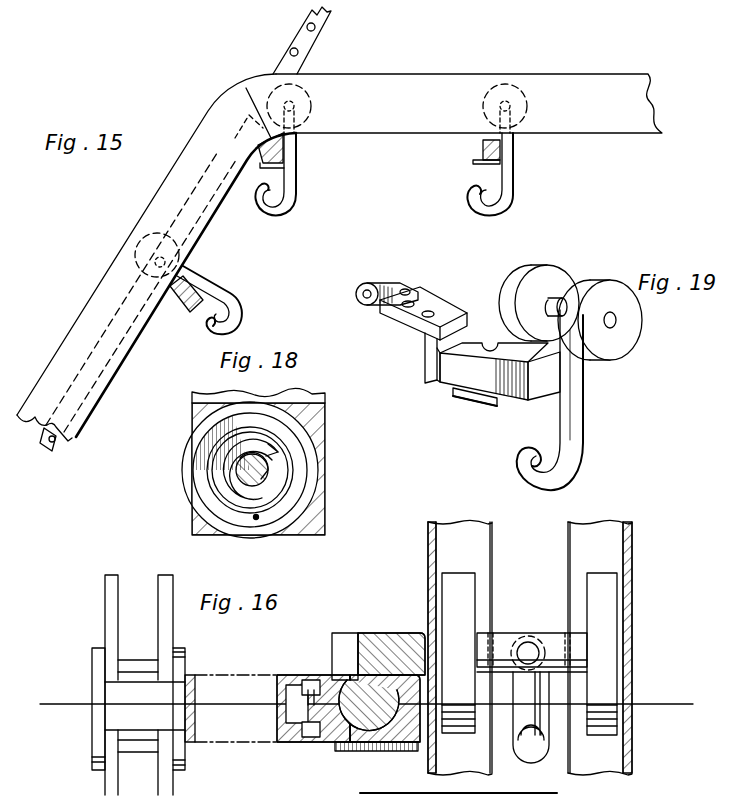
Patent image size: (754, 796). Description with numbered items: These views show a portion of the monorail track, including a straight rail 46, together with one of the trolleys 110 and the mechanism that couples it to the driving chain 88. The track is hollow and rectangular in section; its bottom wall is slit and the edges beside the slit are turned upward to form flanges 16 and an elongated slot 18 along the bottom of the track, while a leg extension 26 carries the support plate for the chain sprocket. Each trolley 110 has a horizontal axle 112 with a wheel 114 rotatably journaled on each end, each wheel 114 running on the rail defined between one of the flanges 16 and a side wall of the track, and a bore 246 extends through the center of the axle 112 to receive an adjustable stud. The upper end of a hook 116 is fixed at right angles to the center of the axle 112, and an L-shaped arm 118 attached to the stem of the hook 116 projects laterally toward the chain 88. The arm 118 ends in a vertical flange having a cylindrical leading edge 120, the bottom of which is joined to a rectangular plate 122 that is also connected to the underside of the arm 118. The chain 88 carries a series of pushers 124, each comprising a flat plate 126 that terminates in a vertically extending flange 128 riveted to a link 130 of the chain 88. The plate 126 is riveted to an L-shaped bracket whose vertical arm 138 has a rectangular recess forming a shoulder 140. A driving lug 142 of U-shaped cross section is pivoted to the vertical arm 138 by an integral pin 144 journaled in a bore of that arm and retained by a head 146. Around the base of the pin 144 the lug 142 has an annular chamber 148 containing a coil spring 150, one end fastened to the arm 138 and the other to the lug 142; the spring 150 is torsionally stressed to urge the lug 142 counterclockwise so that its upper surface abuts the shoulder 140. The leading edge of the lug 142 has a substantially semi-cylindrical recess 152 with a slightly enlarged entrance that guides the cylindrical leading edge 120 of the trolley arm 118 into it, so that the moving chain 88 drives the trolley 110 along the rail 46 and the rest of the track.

In FIG. 16, the flanges 16 is at (568, 572).
In FIG. 16, the elongated slot 18 is at (532, 543).
In FIG. 15, the leg extension 26 is at (62, 337).
In FIG. 15, the straight rail 46 is at (590, 74).
In FIG. 15, the link-type chain 88 is at (286, 26).
In FIG. 16, the link-type chain 88 is at (97, 626).
In FIG. 19, the trolley 110 is at (536, 250).
In FIG. 19, the horizontal axle 112 is at (557, 300).
In FIG. 19, the wheel 114 is at (603, 287).
In FIG. 16, the wheel 114 is at (460, 582).
In FIG. 15, the hook 116 is at (295, 192).
In FIG. 19, the hook 116 is at (583, 418).
In FIG. 19, the L-shaped arm 118 is at (528, 400).
In FIG. 16, the L-shaped arm 118 is at (410, 633).
In FIG. 19, the cylindrical leading edge 120 is at (490, 342).
In FIG. 16, the cylindrical leading edge 120 is at (347, 746).
In FIG. 15, the rectangular plate 122 is at (294, 140).
In FIG. 19, the rectangular plate 122 is at (477, 405).
In FIG. 16, the rectangular plate 122 is at (333, 650).
In FIG. 19, the pusher 124 is at (440, 302).
In FIG. 19, the flat plate 126 is at (420, 298).
In FIG. 16, the vertically extending flange 128 is at (192, 708).
In FIG. 19, the link 130 is at (375, 288).
In FIG. 16, the link 130 is at (183, 651).
In FIG. 19, the vertical arm 138 is at (424, 345).
In FIG. 19, the shoulder 140 is at (433, 358).
In FIG. 15, the driving lug 142 is at (302, 133).
In FIG. 19, the driving lug 142 is at (500, 410).
In FIG. 16, the driving lug 142 is at (378, 744).
In FIG. 18, the pin 144 is at (270, 477).
In FIG. 16, the pin 144 is at (287, 697).
In FIG. 16, the head 146 is at (276, 692).
In FIG. 16, the annular chamber 148 is at (315, 690).
In FIG. 18, the coil spring 150 is at (292, 460).
In FIG. 16, the coil spring 150 is at (307, 727).
In FIG. 16, the semi-cylindrical recess 152 is at (347, 678).
In FIG. 16, the bore 246 is at (528, 642).